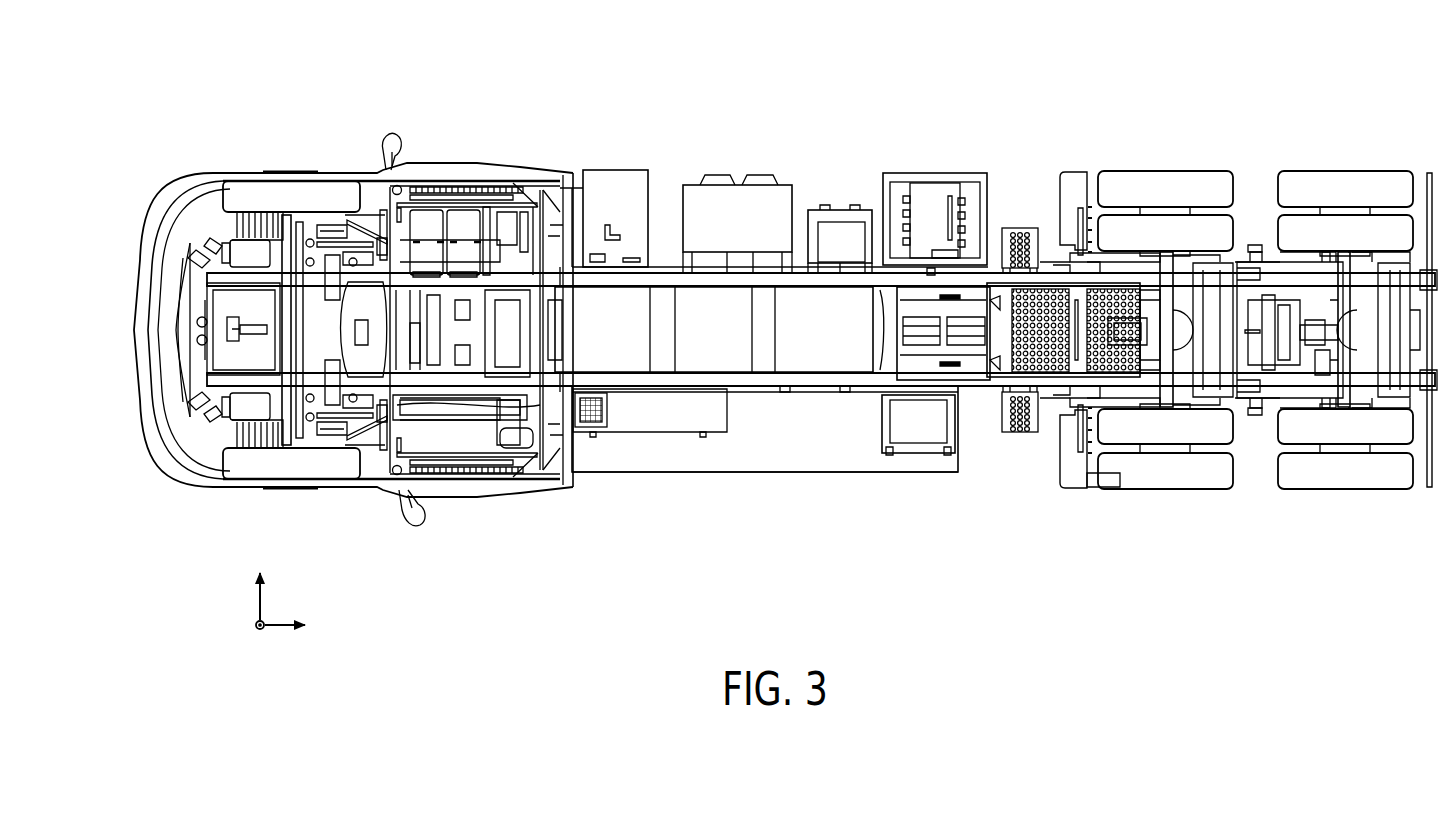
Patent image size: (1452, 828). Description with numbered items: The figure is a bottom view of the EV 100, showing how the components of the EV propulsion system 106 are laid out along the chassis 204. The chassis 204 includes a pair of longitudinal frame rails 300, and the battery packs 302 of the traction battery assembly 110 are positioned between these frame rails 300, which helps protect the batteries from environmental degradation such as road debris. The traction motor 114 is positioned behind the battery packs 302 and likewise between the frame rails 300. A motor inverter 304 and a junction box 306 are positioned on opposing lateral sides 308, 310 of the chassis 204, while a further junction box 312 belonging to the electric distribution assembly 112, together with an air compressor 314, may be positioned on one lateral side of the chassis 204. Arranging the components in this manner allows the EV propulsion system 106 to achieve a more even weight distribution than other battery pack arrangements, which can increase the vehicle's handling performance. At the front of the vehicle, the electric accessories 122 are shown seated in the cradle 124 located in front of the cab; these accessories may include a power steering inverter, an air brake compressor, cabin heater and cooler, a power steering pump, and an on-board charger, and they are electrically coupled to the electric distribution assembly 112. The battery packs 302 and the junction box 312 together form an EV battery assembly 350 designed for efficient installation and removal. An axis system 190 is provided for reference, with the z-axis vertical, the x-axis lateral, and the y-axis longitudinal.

The EV 100 is at (181, 114).
The EV propulsion system 106 is at (705, 95).
The traction battery assembly 110 is at (802, 275).
The electric distribution assembly 112 is at (917, 157).
The traction motor 114 is at (958, 352).
The electric accessories 122 is at (240, 297).
The cradle 124 is at (183, 335).
The axis system 190 is at (283, 586).
The chassis 204 is at (752, 407).
The frame rails 300 is at (802, 380).
The battery packs 302 is at (698, 347).
The motor inverter 304 is at (910, 423).
The junction box 306 is at (940, 187).
The lateral side 308 is at (768, 533).
The lateral side 310 is at (932, 125).
The junction box 312 is at (846, 240).
The air compressor 314 is at (610, 193).
The EV battery assembly 350 is at (763, 112).